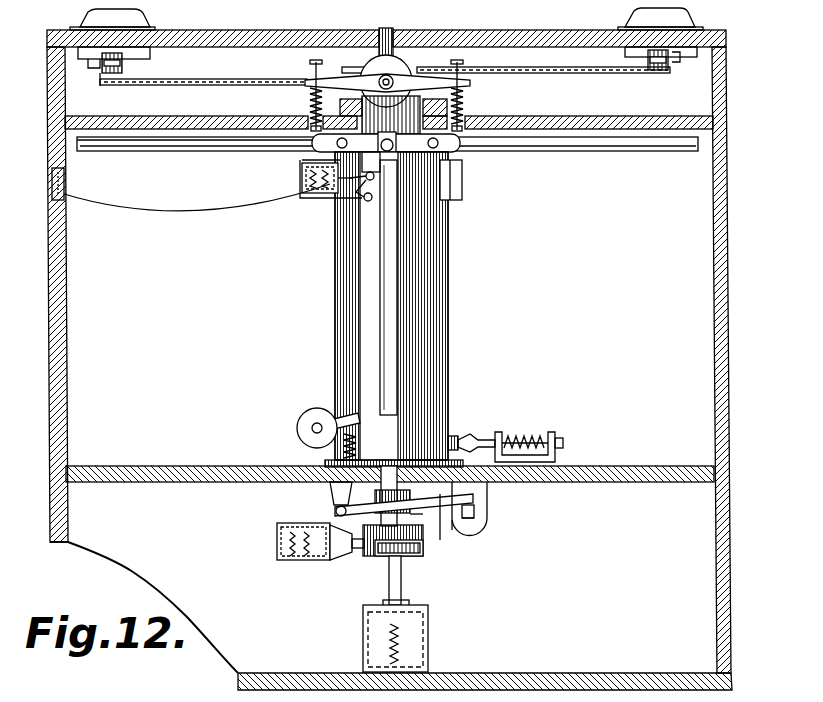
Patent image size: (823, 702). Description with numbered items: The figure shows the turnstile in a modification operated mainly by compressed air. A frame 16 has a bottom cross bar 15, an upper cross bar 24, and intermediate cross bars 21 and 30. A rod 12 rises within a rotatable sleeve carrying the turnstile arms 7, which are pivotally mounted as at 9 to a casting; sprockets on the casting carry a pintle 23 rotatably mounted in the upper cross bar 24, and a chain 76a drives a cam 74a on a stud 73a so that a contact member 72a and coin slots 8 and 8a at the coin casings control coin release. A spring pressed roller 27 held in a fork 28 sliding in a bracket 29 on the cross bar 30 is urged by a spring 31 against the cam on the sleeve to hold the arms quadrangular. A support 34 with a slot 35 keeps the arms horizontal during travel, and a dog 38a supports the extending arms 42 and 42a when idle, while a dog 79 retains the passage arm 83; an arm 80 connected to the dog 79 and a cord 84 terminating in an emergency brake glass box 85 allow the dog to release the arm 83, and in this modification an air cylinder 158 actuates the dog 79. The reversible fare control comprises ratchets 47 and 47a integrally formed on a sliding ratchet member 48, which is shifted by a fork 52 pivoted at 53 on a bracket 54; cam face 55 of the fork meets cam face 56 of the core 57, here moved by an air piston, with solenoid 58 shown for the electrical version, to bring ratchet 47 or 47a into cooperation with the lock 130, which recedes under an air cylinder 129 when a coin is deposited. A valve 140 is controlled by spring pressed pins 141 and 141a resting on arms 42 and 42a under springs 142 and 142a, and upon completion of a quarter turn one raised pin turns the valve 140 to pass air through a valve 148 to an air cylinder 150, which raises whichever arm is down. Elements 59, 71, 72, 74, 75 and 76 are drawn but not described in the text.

The arms 7 is at (148, 153).
The coin slot 8 is at (86, 20).
The coin slot 8a is at (683, 15).
The pivot 9 is at (452, 150).
The rod 12 is at (388, 584).
The bottom cross bar 15 is at (561, 662).
The frame 16 is at (735, 372).
The cross bar 21 is at (580, 100).
The pintle 23 is at (388, 50).
The upper cross bar 24 is at (560, 40).
The spring pressed roller 27 is at (452, 438).
The fork 28 is at (476, 444).
The bracket 29 is at (561, 438).
The cross bar 30 is at (670, 483).
The spring 31 is at (530, 436).
The support 34 is at (440, 268).
The slot 35 is at (402, 341).
The dog 38a is at (463, 186).
The arm 42 is at (211, 151).
The arm 42a is at (603, 152).
The ratchet 47 is at (410, 556).
The ratchet 47a is at (384, 556).
The sliding ratchet member 48 is at (414, 517).
The fork 52 is at (442, 538).
The pivot 53 is at (336, 512).
The bracket 54 is at (335, 494).
The cam face 55 is at (476, 500).
The cam face 56 is at (485, 527).
The core 57 is at (478, 511).
The solenoid 58 is at (478, 525).
The hook end 59 is at (460, 524).
The bracket 71 is at (97, 66).
The plate 72 is at (143, 42).
The contact member 72a is at (640, 50).
The stud 73a is at (680, 64).
The nut 74 is at (124, 63).
The cam 74a is at (660, 72).
The stem 75 is at (110, 86).
The rack 76 is at (219, 84).
The chain 76a is at (556, 74).
The dog 79 is at (392, 176).
The arm 80 is at (335, 198).
The passage arm 83 is at (393, 152).
The cord 84 is at (196, 213).
The emergency brake glass box 85 is at (52, 186).
The air cylinder 129 is at (277, 540).
The lock 130 is at (350, 549).
The valve 140 is at (404, 60).
The spring pressed pin 141 is at (311, 64).
The spring pressed pin 141a is at (464, 70).
The spring 142 is at (309, 105).
The spring 142a is at (464, 100).
The valve 148 is at (312, 409).
The air cylinder 150 is at (420, 646).
The air cylinder 158 is at (302, 180).